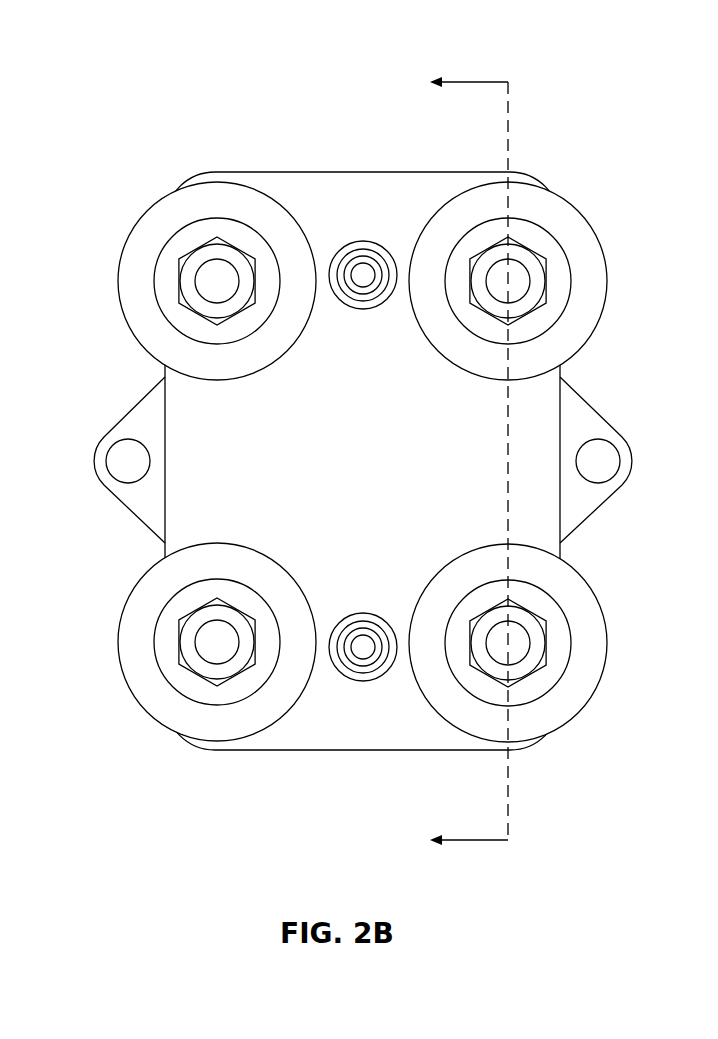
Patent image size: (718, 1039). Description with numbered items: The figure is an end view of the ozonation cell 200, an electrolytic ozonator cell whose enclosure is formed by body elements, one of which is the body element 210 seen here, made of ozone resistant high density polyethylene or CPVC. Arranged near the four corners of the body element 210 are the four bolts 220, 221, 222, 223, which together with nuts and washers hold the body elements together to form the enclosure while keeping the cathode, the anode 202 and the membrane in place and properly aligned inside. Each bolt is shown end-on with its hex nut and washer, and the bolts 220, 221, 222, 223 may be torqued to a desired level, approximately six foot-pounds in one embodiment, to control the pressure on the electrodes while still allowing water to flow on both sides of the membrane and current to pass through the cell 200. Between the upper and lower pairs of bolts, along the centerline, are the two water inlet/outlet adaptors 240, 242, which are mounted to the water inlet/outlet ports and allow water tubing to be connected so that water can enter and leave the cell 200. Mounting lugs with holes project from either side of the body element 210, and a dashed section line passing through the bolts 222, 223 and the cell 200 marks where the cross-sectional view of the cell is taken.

The ozonation cell 200 is at (405, 438).
The anode 202 is at (603, 417).
The body element 210 is at (545, 397).
The bolt 220 is at (185, 253).
The bolt 221 is at (188, 668).
The bolt 222 is at (538, 260).
The bolt 223 is at (538, 667).
The water inlet/outlet adaptor 240 is at (362, 681).
The water inlet/outlet adaptor 242 is at (362, 241).